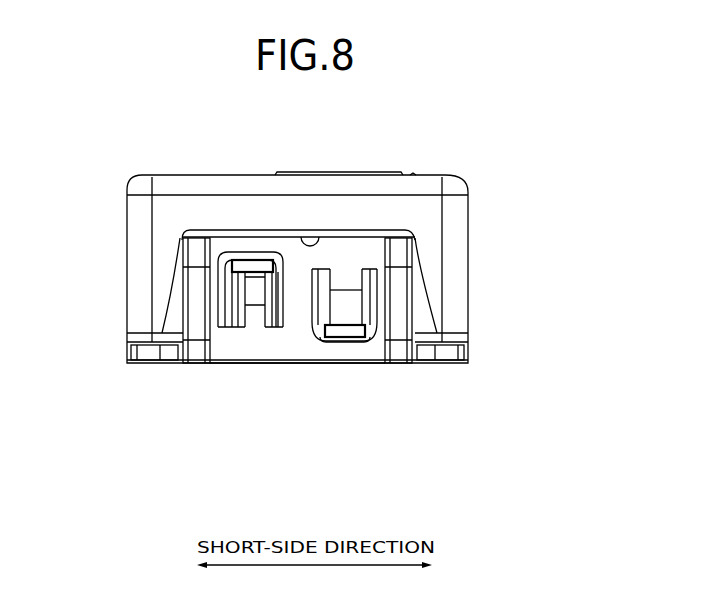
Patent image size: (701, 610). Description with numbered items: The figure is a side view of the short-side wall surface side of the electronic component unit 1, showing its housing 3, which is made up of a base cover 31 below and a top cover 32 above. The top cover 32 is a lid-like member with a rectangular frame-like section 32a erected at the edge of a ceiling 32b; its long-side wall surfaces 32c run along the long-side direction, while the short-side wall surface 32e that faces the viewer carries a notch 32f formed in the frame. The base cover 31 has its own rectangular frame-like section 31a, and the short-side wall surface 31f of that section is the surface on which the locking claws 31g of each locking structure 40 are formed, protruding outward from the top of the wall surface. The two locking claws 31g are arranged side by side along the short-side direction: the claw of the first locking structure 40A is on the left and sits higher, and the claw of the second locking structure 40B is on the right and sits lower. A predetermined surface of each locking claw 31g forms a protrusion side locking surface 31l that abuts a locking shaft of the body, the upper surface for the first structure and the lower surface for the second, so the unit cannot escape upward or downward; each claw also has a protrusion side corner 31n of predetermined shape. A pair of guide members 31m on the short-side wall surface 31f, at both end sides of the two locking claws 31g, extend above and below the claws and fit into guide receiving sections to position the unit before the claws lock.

The electronic component unit 1 is at (126, 136).
The housing 3 is at (547, 190).
The base cover 31 is at (424, 304).
The rectangular frame-like section 31a is at (297, 389).
The short-side wall surface 31f is at (295, 305).
The locking claw 31g is at (248, 263).
The protrusion side locking surface 31l is at (248, 263).
The guide member 31m is at (197, 305).
The protrusion side corner 31n is at (223, 257).
The top cover 32 is at (476, 231).
The rectangular frame-like section 32a is at (122, 216).
The ceiling 32b is at (378, 170).
The long-side wall surface 32c is at (468, 208).
The short-side wall surface 32e is at (211, 212).
The notch 32f is at (318, 236).
The locking structure 40 is at (315, 388).
The first locking structure 40A is at (251, 384).
The second locking structure 40B is at (365, 397).